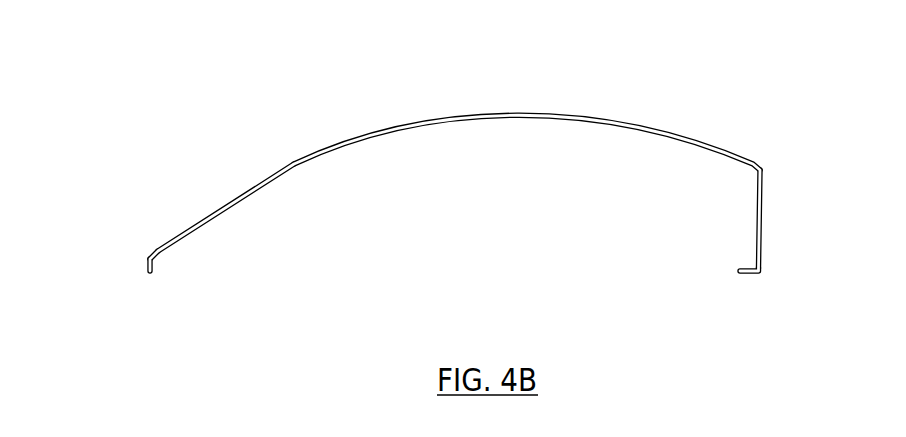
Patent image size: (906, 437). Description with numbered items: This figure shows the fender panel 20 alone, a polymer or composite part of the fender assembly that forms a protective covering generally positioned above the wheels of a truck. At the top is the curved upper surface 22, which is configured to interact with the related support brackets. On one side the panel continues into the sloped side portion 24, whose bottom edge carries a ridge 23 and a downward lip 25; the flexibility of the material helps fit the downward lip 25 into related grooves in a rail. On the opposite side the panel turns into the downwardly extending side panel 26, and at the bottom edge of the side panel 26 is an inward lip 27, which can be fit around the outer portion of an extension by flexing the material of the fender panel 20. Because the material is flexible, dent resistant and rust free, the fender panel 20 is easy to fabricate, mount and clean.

The fender panel 20 is at (450, 177).
The curved upper surface 22 is at (475, 116).
The ridge 23 is at (158, 256).
The sloped side portion 24 is at (192, 222).
The downward lip 25 is at (148, 260).
The downwardly extending side panel 26 is at (762, 240).
The inward lip 27 is at (750, 274).